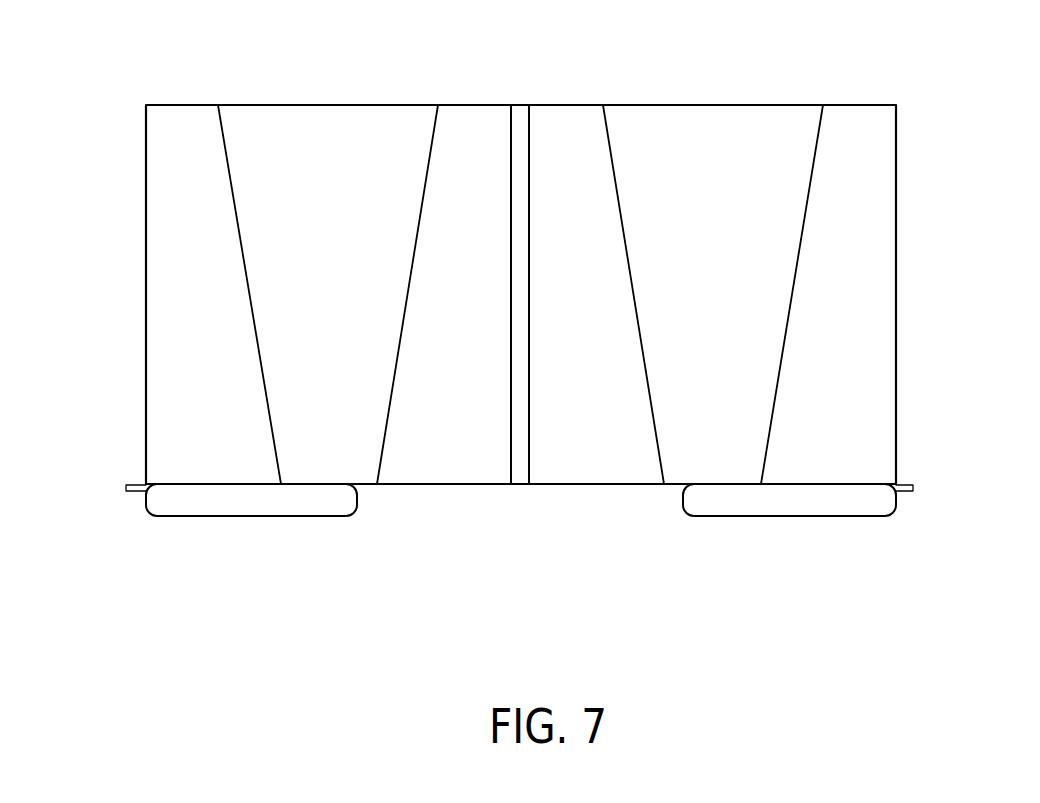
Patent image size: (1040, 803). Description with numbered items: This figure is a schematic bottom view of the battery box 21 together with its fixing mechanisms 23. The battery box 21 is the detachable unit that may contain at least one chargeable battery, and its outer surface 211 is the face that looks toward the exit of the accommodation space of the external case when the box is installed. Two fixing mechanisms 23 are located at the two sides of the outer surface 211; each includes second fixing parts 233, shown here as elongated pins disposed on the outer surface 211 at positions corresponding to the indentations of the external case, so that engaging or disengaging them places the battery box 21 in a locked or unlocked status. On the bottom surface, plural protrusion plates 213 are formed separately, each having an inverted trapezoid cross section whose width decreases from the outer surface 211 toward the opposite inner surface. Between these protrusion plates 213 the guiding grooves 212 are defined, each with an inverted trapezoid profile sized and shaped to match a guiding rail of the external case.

The battery box 21 is at (916, 221).
The outer surface 211 is at (598, 485).
The guiding groove 212 is at (318, 127).
The protrusion plate 213 is at (165, 285).
The fixing mechanism 23 is at (230, 535).
The second fixing part 233 is at (128, 484).